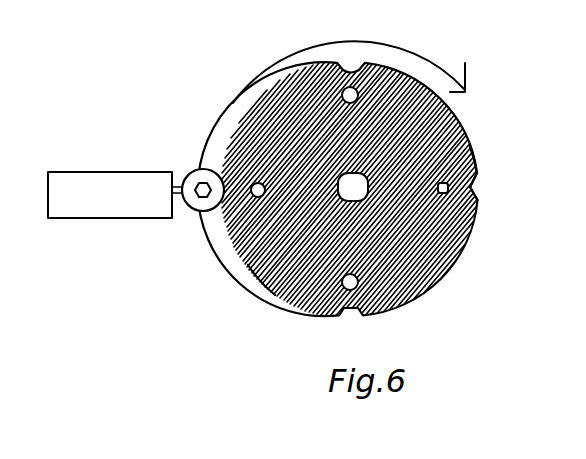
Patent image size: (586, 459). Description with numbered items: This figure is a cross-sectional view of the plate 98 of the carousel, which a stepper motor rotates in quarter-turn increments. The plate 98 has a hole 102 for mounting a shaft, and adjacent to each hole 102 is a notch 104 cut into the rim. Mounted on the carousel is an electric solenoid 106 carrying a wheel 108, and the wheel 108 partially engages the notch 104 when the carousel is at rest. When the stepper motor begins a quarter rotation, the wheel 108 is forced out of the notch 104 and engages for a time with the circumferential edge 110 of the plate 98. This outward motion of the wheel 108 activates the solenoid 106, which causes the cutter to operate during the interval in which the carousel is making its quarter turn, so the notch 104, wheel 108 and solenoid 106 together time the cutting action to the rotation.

The plate 98 is at (443, 258).
The hole 102 is at (475, 162).
The notch 104 is at (470, 188).
The electric solenoid 106 is at (100, 200).
The wheel 108 is at (197, 210).
The circumferential edge 110 is at (267, 290).